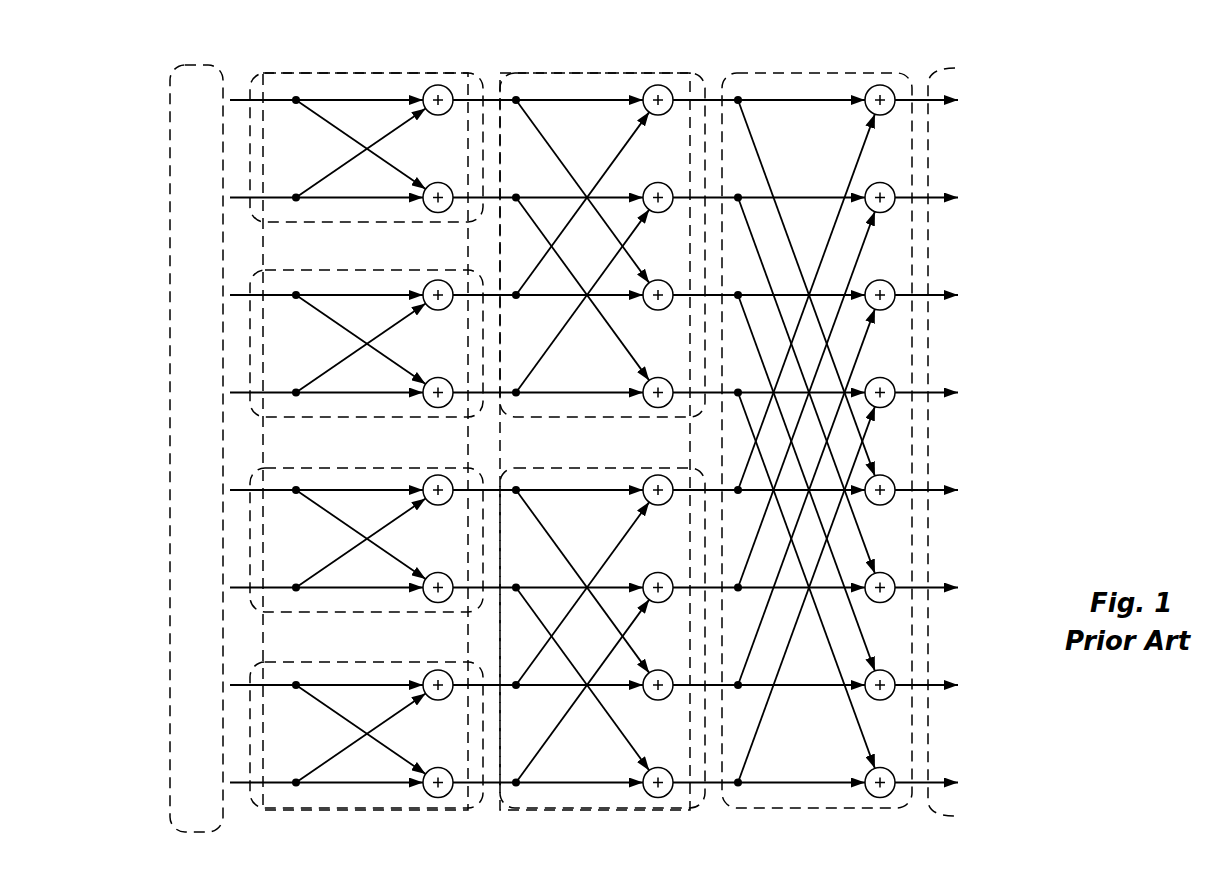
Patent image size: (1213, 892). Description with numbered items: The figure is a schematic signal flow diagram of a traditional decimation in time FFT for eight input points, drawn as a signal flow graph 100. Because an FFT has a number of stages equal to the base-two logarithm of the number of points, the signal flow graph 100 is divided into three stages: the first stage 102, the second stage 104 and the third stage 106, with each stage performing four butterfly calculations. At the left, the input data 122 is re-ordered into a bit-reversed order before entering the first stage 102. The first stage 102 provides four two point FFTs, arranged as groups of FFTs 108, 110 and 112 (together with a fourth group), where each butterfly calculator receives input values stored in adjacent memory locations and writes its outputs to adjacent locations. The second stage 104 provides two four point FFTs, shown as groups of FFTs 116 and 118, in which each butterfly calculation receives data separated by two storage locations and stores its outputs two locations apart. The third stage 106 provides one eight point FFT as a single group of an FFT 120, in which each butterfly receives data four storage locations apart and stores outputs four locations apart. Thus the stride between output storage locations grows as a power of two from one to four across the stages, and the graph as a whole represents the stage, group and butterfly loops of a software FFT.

The signal flow graph 100 is at (931, 42).
The first stage 102 is at (374, 422).
The second stage 104 is at (609, 422).
The third stage 106 is at (817, 404).
The group of FFTs 108 is at (398, 73).
The group of FFTs 110 is at (368, 270).
The group of FFTs 112 is at (373, 612).
The group of FFTs 116 is at (617, 73).
The group of FFTs 118 is at (558, 810).
The group of an FFT 120 is at (832, 73).
The input data 122 is at (200, 65).